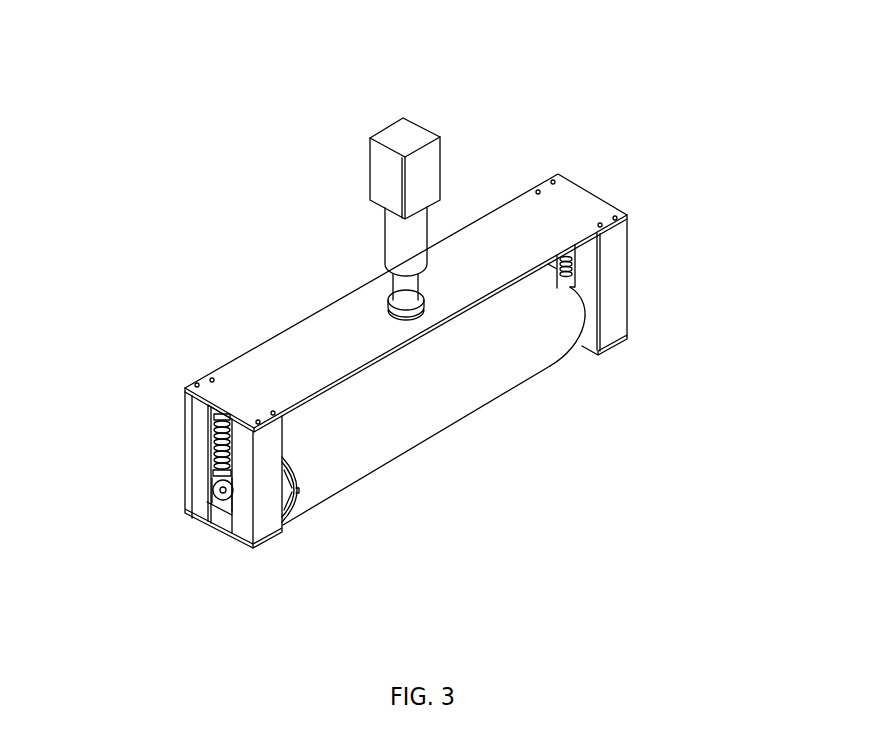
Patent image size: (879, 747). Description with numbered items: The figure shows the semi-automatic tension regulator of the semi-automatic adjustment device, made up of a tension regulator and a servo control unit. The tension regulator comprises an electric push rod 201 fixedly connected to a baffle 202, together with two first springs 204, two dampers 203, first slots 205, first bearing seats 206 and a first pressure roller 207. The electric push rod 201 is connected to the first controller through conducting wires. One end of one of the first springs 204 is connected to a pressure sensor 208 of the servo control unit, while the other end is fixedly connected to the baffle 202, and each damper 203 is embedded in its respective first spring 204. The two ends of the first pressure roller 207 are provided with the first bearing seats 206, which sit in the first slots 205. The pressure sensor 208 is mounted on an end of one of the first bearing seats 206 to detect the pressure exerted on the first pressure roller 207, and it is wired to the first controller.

The electric push rod 201 is at (403, 250).
The baffle 202 is at (358, 345).
The damper 203 is at (187, 388).
The first spring 204 is at (222, 450).
The first slot 205 is at (222, 475).
The first bearing seat 206 is at (228, 483).
The first pressure roller 207 is at (490, 365).
The pressure sensor 208 is at (216, 477).